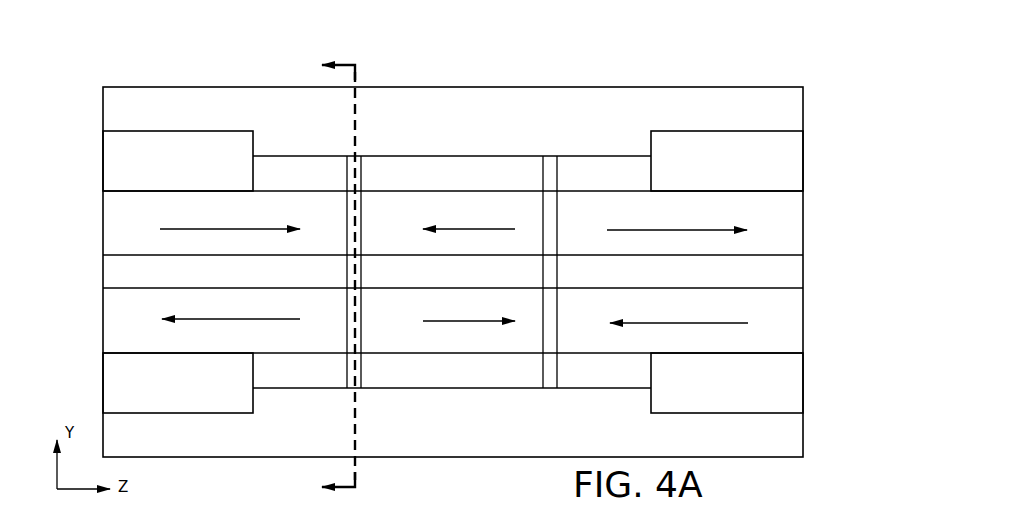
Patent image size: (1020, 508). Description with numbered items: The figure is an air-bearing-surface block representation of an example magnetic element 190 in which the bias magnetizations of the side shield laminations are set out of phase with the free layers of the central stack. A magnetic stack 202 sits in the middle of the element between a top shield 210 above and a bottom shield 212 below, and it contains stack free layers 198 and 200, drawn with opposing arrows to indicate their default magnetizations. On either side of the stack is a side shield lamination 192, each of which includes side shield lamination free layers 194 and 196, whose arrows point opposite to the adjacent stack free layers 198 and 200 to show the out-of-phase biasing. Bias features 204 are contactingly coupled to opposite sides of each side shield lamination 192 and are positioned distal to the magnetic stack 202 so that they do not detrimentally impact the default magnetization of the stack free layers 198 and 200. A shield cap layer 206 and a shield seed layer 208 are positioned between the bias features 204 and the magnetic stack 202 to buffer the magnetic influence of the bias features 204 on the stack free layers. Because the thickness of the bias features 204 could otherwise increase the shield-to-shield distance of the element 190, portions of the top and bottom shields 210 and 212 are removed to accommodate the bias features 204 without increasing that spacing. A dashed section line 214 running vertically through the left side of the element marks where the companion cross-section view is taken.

The magnetic element 190 is at (757, 56).
The side shield lamination 192 is at (100, 257).
The side shield lamination free layer 194 is at (452, 224).
The side shield lamination free layer 196 is at (451, 320).
The stack free layer 198 is at (440, 223).
The stack free layer 200 is at (439, 320).
The magnetic stack 202 is at (518, 388).
The bias feature 204 is at (103, 178).
The shield cap layer 206 is at (276, 155).
The shield seed layer 208 is at (297, 388).
The top shield 210 is at (303, 110).
The bottom shield 212 is at (310, 433).
The section line 214 is at (354, 280).